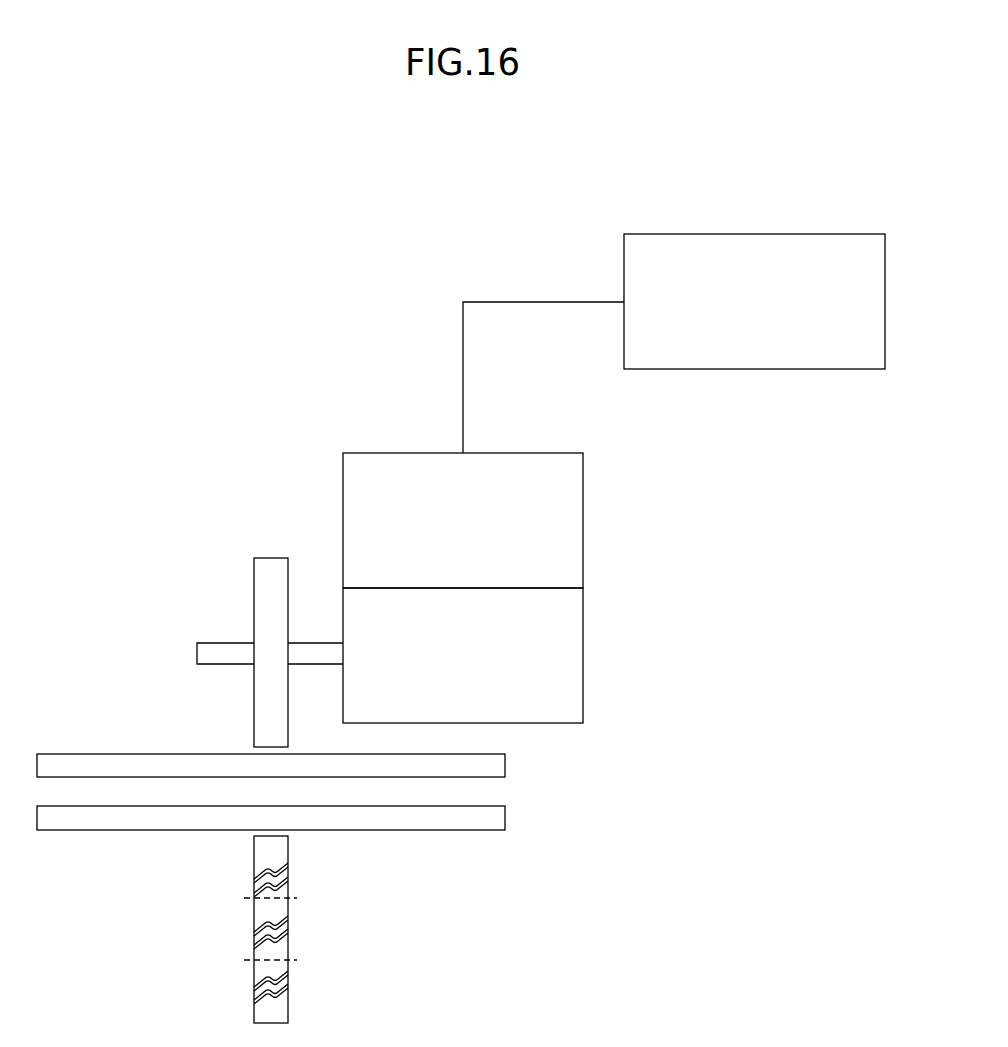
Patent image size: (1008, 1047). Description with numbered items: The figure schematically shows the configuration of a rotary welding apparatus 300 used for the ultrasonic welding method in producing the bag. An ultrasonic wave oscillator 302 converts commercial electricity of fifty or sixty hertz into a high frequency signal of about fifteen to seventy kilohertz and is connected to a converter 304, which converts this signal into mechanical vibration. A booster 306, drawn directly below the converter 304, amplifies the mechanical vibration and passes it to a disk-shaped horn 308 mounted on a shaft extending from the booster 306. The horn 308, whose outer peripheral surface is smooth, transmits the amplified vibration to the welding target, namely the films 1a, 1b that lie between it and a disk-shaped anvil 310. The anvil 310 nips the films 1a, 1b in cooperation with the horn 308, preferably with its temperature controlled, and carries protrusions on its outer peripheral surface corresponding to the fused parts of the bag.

The welding apparatus 300 is at (439, 222).
The ultrasonic wave oscillator 302 is at (777, 316).
The converter 304 is at (481, 537).
The booster 306 is at (481, 666).
The disk-shaped horn 308 is at (254, 592).
The film 1a is at (490, 768).
The film 1b is at (490, 820).
The disk-shaped anvil 310 is at (288, 942).